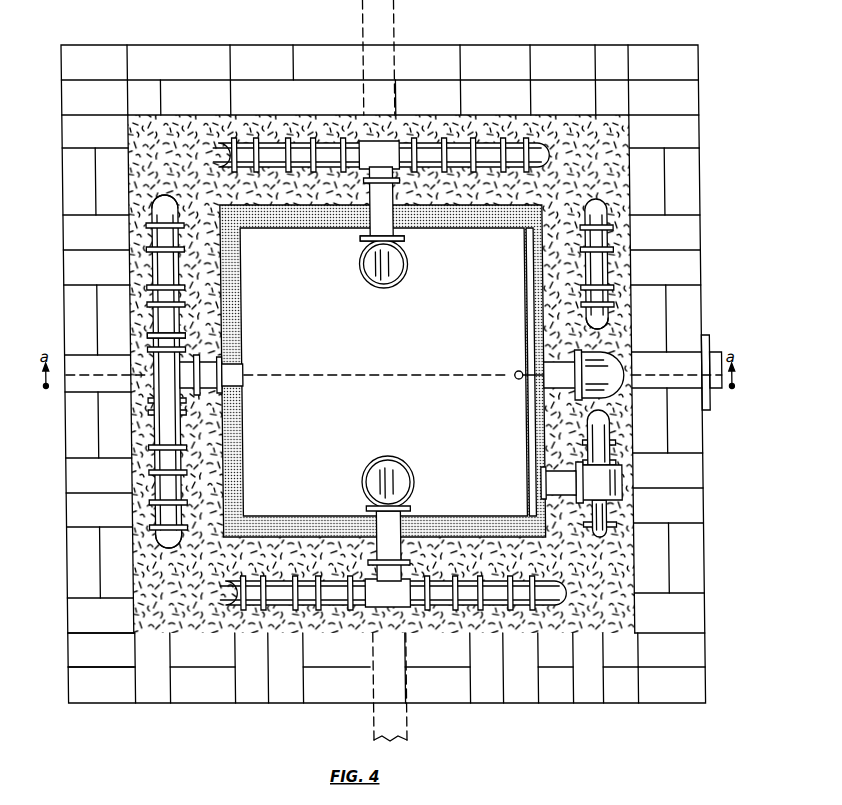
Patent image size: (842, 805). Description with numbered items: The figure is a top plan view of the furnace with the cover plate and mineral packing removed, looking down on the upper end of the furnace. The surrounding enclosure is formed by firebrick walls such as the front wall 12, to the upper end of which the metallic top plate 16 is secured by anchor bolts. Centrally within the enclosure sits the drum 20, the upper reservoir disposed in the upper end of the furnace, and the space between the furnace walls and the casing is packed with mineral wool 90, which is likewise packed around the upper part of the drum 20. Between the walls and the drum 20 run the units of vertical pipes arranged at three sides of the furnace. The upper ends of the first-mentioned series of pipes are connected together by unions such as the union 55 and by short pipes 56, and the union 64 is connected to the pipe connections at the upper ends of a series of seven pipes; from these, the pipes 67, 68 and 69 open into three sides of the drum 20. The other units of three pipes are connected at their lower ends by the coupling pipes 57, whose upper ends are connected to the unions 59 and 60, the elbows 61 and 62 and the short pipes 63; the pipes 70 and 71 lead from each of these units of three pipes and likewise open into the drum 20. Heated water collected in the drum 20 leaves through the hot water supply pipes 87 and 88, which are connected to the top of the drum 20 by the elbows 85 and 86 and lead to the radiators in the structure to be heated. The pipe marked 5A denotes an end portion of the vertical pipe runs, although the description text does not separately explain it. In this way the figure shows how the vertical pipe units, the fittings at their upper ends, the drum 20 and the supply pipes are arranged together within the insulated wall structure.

The front wall 12 is at (393, 374).
The metallic top plate 16 is at (121, 690).
The drum 20 is at (383, 371).
The pipe end cap 5A is at (160, 200).
The union 55 is at (182, 268).
The short pipe 56 is at (157, 340).
The coupling pipe 57 is at (350, 155).
The union 59 is at (599, 482).
The union 60 is at (600, 318).
The elbow 61 is at (600, 425).
The elbow 62 is at (600, 220).
The short pipe 63 is at (600, 247).
The union 64 is at (194, 375).
The pipe 67 is at (228, 375).
The pipe 68 is at (404, 268).
The pipe 69 is at (406, 517).
The pipe 70 is at (525, 262).
The pipe 71 is at (536, 483).
The elbow 85 is at (385, 462).
The elbow 86 is at (381, 288).
The hot water supply pipe 87 is at (408, 535).
The hot water supply pipe 88 is at (388, 222).
The mineral wool 90 is at (597, 600).